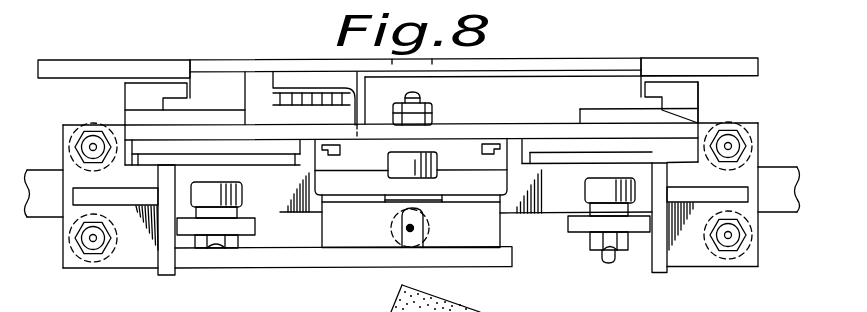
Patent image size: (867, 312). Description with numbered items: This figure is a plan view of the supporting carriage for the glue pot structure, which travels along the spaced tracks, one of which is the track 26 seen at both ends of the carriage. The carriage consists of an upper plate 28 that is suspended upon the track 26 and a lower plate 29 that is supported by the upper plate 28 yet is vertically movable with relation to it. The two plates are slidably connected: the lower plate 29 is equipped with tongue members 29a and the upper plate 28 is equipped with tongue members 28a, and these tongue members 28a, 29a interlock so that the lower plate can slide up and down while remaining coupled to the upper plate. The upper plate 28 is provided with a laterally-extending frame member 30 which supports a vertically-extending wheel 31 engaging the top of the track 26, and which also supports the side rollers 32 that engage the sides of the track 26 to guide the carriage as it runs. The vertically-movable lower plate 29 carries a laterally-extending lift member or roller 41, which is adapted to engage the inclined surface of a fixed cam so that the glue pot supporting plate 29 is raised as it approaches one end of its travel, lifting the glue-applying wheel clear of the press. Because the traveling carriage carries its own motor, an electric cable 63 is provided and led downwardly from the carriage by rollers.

The track 26 is at (47, 218).
The upper plate 28 is at (477, 132).
The tongue members 28a is at (130, 95).
The lower plate 29 is at (544, 62).
The tongue members 29a is at (240, 100).
The frame member 30 is at (297, 268).
The wheel 31 is at (243, 190).
The side rollers 32 is at (72, 133).
The lift member or roller 41 is at (437, 156).
The electric cable 63 is at (415, 228).